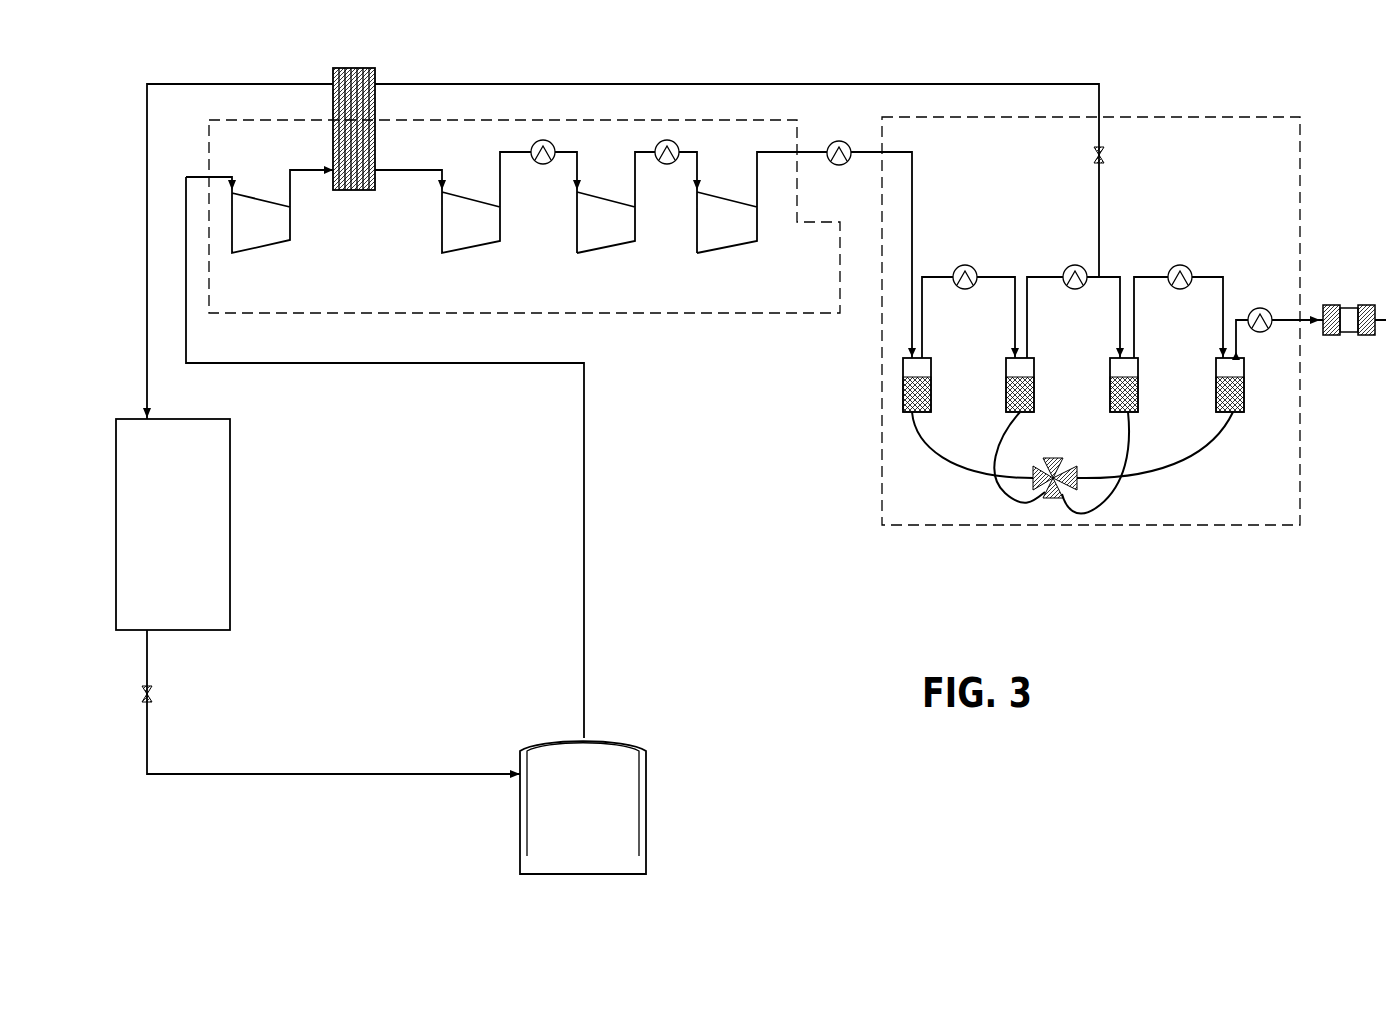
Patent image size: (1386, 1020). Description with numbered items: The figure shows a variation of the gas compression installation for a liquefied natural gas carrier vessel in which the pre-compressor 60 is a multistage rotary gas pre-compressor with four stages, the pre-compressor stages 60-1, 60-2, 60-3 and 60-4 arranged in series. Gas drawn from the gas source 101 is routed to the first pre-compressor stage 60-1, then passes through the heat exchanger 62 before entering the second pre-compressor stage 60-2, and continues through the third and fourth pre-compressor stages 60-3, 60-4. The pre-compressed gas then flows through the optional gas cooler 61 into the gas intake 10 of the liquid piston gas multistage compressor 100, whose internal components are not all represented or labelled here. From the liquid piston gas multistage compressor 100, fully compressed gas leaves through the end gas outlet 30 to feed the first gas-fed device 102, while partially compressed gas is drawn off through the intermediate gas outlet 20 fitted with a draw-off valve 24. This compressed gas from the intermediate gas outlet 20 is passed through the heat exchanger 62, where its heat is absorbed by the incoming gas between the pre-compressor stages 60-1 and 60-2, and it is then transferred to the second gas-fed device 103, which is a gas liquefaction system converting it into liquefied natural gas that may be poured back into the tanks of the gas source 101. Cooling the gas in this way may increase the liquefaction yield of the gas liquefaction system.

The gas intake 10 is at (913, 215).
The intermediate gas outlet 20 is at (1097, 130).
The draw-off valve 24 is at (1105, 160).
The end gas outlet 30 is at (1283, 312).
The pre-compressor 60 is at (755, 318).
The first pre-compressor stage 60-1 is at (292, 228).
The second pre-compressor stage 60-2 is at (502, 230).
The third pre-compressor stage 60-3 is at (636, 230).
The fourth pre-compressor stage 60-4 is at (757, 230).
The gas cooler 61 is at (842, 141).
The heat exchanger 62 is at (378, 76).
The liquid piston gas multistage compressor 100 is at (1245, 116).
The gas source 101 is at (608, 735).
The first gas-fed device 102 is at (1352, 302).
The second gas-fed device 103 is at (230, 466).